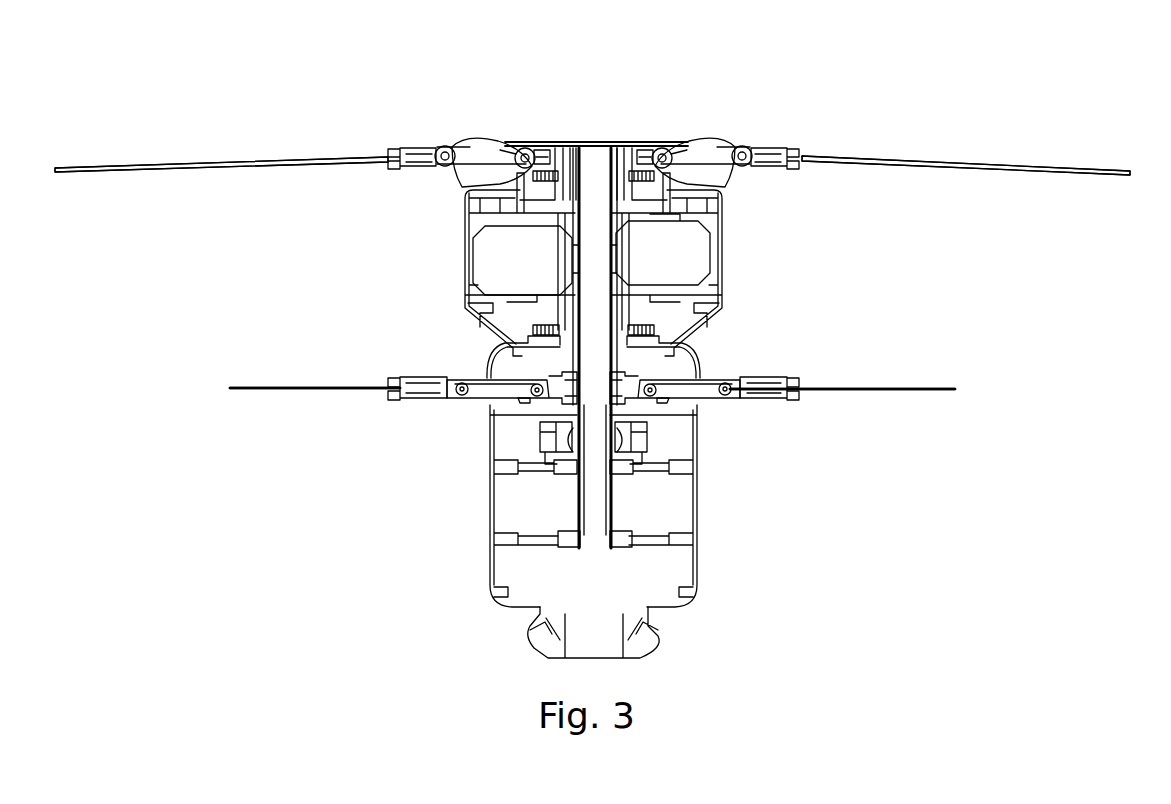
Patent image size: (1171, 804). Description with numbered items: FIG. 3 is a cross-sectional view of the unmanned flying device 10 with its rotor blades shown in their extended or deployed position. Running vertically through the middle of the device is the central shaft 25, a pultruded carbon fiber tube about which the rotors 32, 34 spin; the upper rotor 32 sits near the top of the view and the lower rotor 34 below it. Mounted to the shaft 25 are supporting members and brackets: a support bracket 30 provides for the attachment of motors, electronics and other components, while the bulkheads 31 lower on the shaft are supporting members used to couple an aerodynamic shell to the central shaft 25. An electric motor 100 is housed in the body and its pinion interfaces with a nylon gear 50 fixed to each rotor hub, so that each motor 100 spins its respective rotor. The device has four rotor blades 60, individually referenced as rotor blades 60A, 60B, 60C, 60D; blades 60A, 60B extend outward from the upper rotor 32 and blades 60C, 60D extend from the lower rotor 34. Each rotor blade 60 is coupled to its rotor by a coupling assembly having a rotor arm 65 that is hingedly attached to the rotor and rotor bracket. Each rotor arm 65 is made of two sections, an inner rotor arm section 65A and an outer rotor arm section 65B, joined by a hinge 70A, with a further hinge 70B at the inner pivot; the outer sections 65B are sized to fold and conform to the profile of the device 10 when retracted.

The unmanned flying device 10 is at (774, 86).
The central shaft 25 is at (622, 510).
The support bracket 30 is at (478, 222).
The bulkheads 31 is at (527, 482).
The rotor 32 is at (573, 138).
The lower rotor 34 is at (652, 365).
The nylon gear 50 is at (662, 178).
The rotor blades 60 is at (592, 281).
The rotor blade 60A is at (903, 150).
The rotor blade 60B is at (200, 150).
The rotor blade 60C is at (893, 403).
The rotor blade 60D is at (280, 403).
The rotor arm 65 is at (460, 147).
The rotor arm section 65A is at (505, 157).
The rotor arm section 65B is at (413, 146).
The hinge 70A is at (460, 150).
The inner pivot 70B is at (522, 150).
The electric motor 100 is at (505, 255).